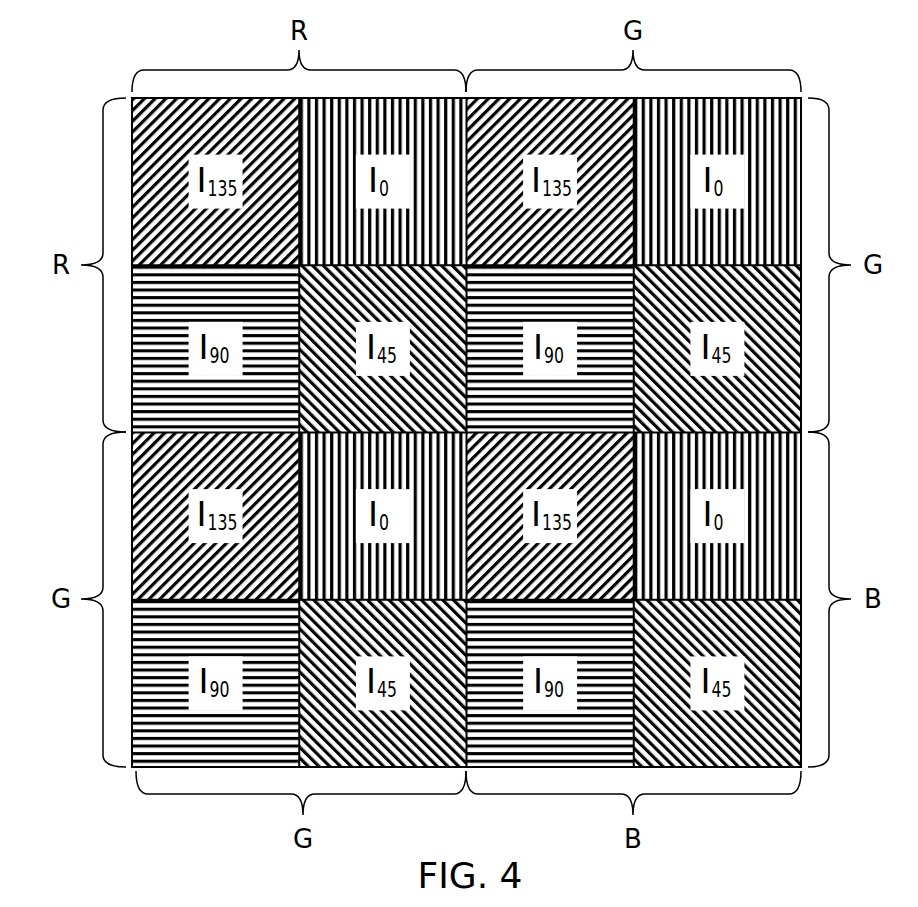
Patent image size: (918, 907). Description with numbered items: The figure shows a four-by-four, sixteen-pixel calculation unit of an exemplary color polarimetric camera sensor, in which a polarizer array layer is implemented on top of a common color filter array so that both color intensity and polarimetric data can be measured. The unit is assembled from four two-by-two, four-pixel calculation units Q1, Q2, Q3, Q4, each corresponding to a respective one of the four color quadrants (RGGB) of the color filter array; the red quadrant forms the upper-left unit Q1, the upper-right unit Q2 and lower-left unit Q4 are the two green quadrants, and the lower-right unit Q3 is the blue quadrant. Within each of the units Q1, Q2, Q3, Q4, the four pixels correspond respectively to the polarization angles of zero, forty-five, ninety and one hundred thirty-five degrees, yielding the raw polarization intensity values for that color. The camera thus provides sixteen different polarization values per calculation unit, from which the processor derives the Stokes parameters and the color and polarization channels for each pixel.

The first calculation unit Q1 is at (122, 82).
The second calculation unit Q2 is at (803, 82).
The third calculation unit Q3 is at (806, 768).
The fourth calculation unit Q4 is at (114, 764).